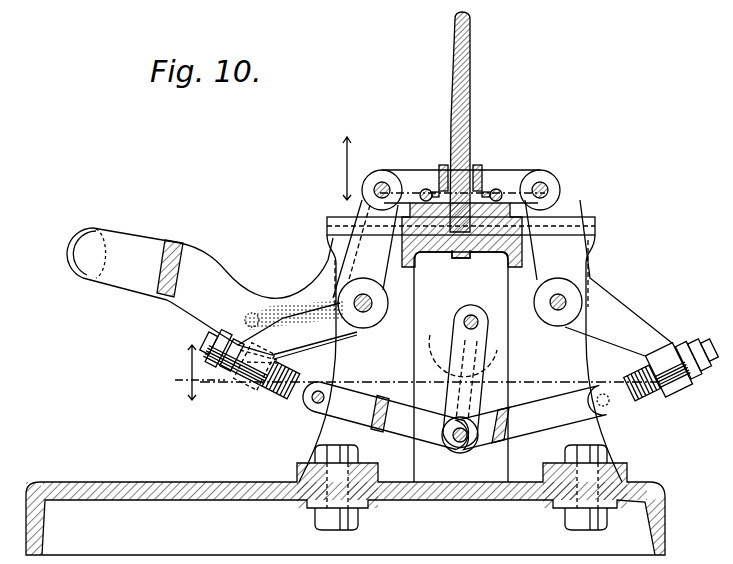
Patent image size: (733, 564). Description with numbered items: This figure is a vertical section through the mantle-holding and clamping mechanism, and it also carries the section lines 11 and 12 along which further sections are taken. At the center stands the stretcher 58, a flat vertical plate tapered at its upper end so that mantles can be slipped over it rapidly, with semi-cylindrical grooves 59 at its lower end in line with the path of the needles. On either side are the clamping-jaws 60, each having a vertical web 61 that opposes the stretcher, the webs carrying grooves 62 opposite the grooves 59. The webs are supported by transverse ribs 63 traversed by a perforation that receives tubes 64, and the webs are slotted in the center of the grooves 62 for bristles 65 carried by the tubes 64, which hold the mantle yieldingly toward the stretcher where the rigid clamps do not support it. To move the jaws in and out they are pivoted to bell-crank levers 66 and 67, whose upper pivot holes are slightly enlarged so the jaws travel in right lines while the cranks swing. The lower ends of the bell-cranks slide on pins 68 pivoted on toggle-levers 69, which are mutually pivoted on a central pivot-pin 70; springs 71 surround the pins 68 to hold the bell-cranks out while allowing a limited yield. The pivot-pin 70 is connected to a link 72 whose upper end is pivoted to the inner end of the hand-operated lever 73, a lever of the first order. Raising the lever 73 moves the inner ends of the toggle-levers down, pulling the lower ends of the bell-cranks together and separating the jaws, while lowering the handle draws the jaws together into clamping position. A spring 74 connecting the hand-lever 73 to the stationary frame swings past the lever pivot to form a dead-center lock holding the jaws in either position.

The section line 11 is at (402, 268).
The section line 12 is at (345, 367).
The stretcher 58 is at (470, 35).
The semi-cylindrical grooves 59 is at (446, 166).
The clamping-jaws 60 is at (503, 252).
The vertical web 61 is at (437, 193).
The grooves 62 is at (426, 190).
The transverse ribs 63 is at (401, 171).
The tubes 64 is at (337, 233).
The bristles 65 is at (479, 166).
The bell-crank lever 66 is at (618, 315).
The bell-crank lever 67 is at (365, 249).
The pins 68 is at (280, 390).
The toggle-levers 69 is at (456, 416).
The central pivot-pin 70 is at (460, 452).
The springs 71 is at (270, 380).
The link 72 is at (468, 384).
The hand-operated lever 73 is at (146, 267).
The spring 74 is at (262, 330).